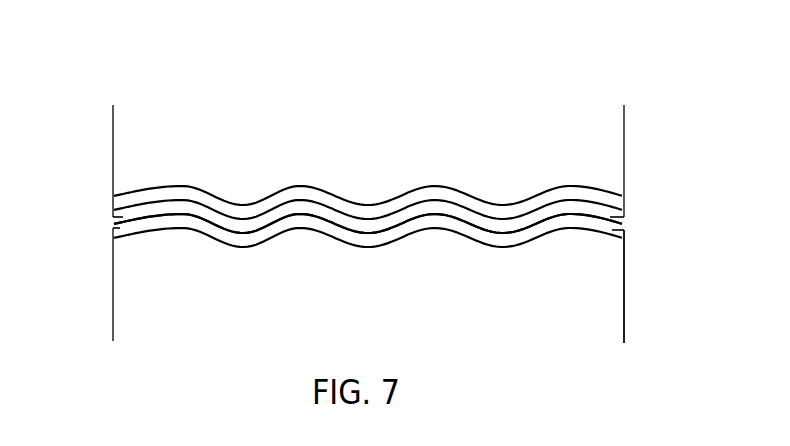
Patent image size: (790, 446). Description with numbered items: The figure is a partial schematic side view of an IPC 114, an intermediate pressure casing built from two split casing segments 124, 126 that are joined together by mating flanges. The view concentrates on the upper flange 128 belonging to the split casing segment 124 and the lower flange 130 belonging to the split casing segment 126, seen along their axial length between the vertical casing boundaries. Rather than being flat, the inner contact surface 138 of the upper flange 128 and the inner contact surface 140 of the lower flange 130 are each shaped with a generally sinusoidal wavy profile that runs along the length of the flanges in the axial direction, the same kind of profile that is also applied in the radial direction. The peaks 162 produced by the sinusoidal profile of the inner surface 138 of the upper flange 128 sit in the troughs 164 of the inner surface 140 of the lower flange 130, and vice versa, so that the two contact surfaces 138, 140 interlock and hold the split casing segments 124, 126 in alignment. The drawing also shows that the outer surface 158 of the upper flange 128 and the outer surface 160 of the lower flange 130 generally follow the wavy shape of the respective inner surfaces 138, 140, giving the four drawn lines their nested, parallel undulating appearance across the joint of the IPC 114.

The IPC 114 is at (233, 80).
The split casing segment 124 is at (407, 157).
The split casing segment 126 is at (288, 300).
The upper flange 128 is at (203, 200).
The lower flange 130 is at (622, 233).
The inner contact surface 138 is at (131, 215).
The inner contact surface 140 is at (607, 222).
The outer surface 158 is at (153, 194).
The outer surface 160 is at (588, 232).
The peaks 162 is at (510, 218).
The troughs 164 is at (504, 236).